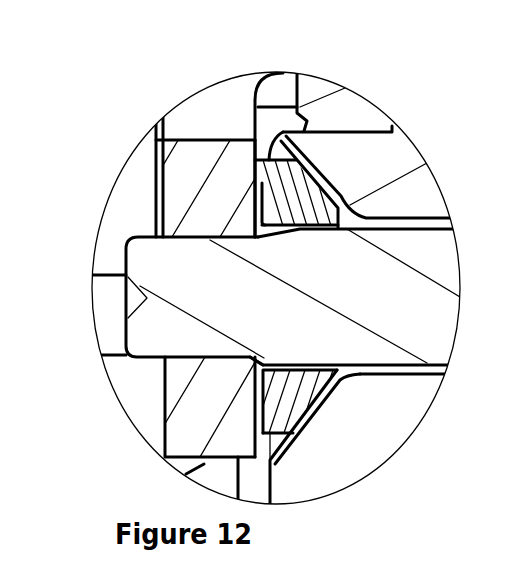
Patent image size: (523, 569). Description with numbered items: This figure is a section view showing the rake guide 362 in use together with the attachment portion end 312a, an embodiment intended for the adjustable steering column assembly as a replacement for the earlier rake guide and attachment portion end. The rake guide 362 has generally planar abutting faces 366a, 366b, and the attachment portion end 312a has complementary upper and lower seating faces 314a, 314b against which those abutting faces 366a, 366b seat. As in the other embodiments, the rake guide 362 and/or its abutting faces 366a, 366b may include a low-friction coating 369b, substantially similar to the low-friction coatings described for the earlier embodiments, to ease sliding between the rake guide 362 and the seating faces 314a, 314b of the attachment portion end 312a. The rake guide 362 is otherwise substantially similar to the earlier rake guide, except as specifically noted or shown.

The rake guide 362 is at (244, 164).
The upper seating face 314a is at (297, 113).
The low-friction coating 369b is at (347, 188).
The attachment portion end 312a is at (362, 122).
The abutting face 366a is at (297, 170).
The abutting face 366b is at (293, 433).
The lower seating face 314b is at (334, 402).